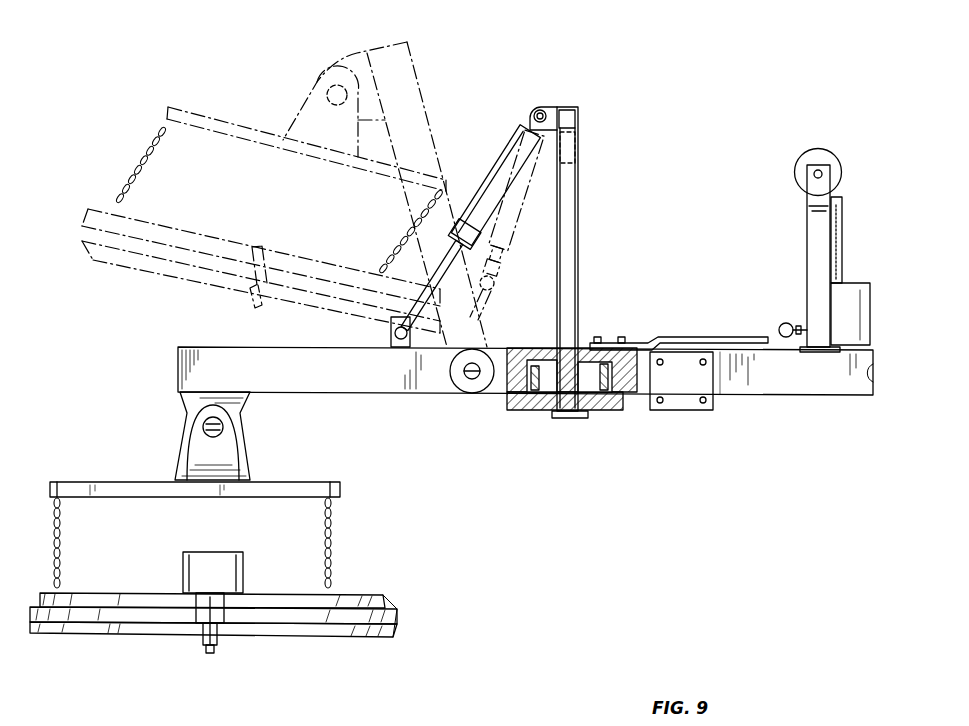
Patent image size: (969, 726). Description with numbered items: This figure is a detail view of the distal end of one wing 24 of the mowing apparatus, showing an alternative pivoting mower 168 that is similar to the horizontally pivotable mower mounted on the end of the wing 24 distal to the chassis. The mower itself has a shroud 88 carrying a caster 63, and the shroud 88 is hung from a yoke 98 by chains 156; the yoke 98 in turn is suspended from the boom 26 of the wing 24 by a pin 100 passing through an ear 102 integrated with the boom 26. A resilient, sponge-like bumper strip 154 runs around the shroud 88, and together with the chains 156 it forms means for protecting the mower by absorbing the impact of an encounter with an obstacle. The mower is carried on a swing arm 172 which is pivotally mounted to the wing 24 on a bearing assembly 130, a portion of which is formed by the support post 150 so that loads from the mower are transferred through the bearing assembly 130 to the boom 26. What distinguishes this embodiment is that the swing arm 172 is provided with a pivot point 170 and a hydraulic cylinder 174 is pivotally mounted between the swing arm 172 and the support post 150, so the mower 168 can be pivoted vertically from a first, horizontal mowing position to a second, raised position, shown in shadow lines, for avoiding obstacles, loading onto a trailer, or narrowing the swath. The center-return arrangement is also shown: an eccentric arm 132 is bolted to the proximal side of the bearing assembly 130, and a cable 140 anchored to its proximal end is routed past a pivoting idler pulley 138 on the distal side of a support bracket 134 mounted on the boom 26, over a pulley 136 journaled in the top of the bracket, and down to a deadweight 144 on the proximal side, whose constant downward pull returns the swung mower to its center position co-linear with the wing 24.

The wing 24 is at (816, 406).
The boom 26 is at (752, 385).
The caster 63 is at (213, 660).
The shroud 88 is at (108, 647).
The yoke 98 is at (292, 486).
The pin 100 is at (204, 430).
The ear 102 is at (222, 458).
The bearing assembly 130 is at (548, 345).
The eccentric arm 132 is at (700, 338).
The support bracket 134 is at (815, 204).
The pulley 136 is at (820, 150).
The pivoting idler pulley 138 is at (780, 324).
The cable 140 is at (842, 196).
The deadweight 144 is at (855, 330).
The support post 150 is at (578, 207).
The bumper strip 154 is at (400, 612).
The chains 156 is at (62, 537).
The pivoting mower 168 is at (503, 486).
The pivot point 170 is at (474, 380).
The swing arm 172 is at (318, 376).
The hydraulic cylinder 174 is at (503, 160).